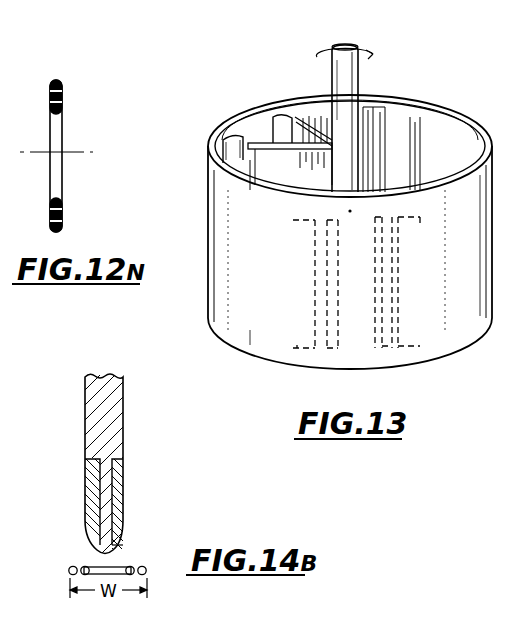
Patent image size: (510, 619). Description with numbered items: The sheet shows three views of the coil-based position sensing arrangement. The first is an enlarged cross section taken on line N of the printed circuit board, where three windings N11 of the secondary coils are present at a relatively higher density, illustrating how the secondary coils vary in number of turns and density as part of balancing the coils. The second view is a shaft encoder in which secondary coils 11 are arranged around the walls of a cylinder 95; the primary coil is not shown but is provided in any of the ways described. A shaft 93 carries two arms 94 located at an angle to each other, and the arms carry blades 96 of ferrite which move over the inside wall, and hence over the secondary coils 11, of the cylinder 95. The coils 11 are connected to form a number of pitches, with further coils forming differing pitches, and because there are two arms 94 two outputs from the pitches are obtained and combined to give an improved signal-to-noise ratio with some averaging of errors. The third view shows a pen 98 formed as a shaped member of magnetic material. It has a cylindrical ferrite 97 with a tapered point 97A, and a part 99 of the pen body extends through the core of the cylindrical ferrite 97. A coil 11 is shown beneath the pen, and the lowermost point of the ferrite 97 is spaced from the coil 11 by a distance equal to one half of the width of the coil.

In FIG. 12N, the windings N11 is at (52, 214).
In FIG. 13, the secondary coil 11 is at (373, 130).
In FIG. 14B, the secondary coil 11 is at (83, 565).
In FIG. 13, the shaft 93 is at (347, 80).
In FIG. 13, the arms 94 is at (265, 165).
In FIG. 13, the cylinder 95 is at (225, 278).
In FIG. 13, the blades 96 is at (237, 145).
In FIG. 14B, the cylindrical ferrite 97 is at (118, 498).
In FIG. 14B, the tapered point 97A is at (120, 544).
In FIG. 14B, the pen 98 is at (110, 430).
In FIG. 14B, the part of the body of the pen 99 is at (107, 507).